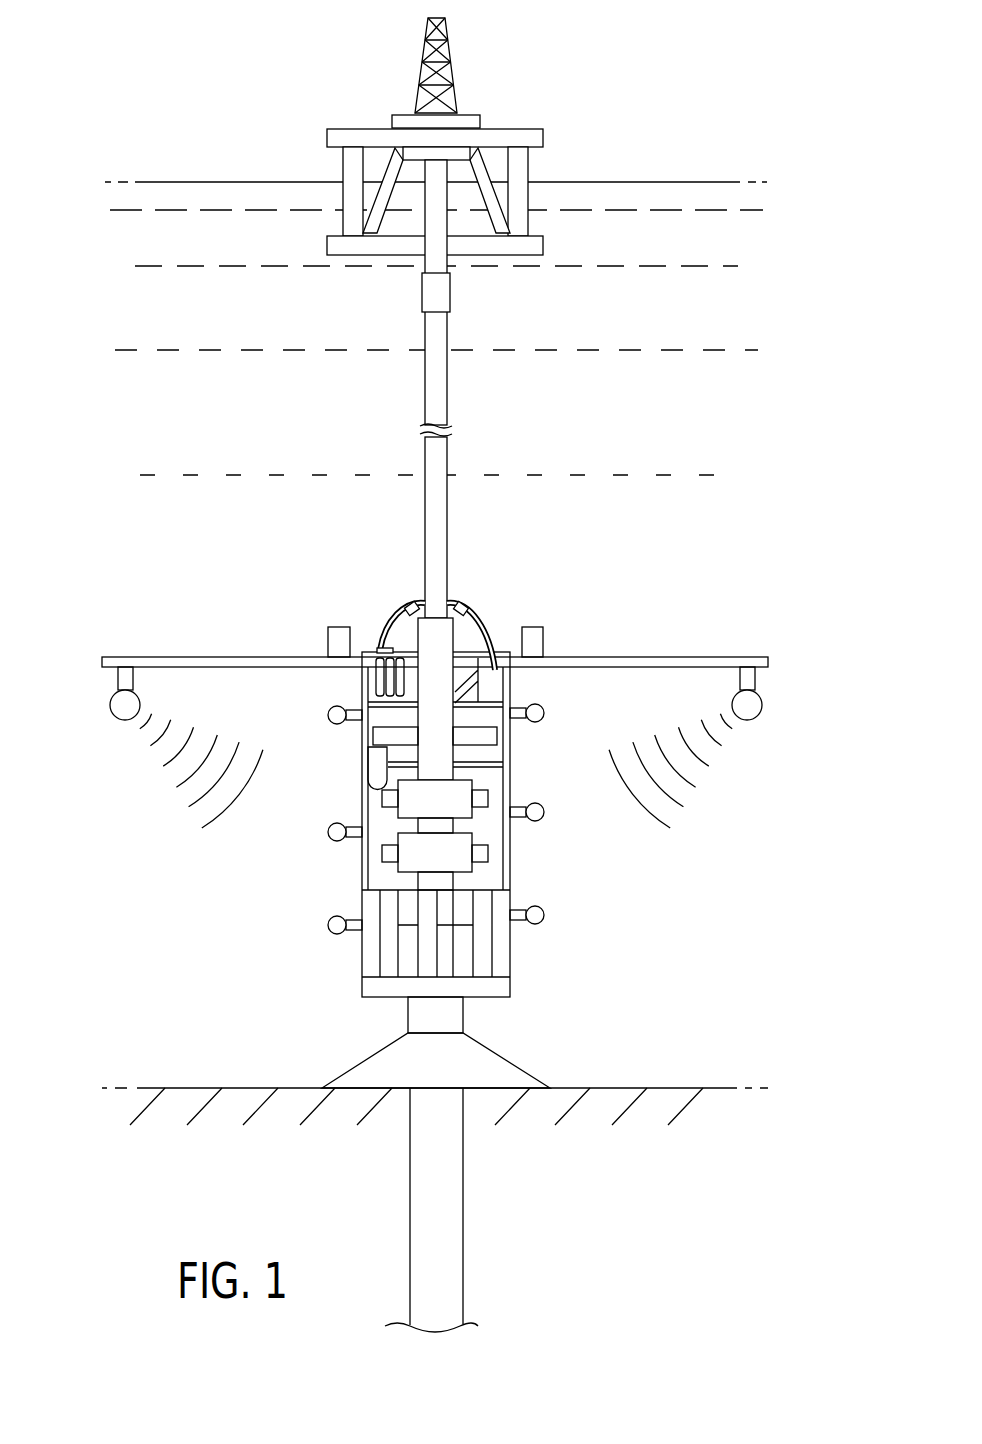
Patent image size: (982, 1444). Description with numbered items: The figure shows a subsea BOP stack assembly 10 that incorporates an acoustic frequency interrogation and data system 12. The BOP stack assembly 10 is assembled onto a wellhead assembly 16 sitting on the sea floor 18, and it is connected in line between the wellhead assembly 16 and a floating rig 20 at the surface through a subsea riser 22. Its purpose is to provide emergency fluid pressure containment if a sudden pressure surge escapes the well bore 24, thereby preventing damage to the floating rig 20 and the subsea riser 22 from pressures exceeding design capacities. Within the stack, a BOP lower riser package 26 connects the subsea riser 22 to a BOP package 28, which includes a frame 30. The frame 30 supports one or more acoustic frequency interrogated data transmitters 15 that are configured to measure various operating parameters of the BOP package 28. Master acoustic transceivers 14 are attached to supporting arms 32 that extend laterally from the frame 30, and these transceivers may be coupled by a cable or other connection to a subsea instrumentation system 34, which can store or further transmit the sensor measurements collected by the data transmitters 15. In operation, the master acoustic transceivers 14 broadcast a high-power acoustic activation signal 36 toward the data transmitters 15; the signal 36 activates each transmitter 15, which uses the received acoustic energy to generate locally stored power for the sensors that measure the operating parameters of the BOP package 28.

The subsea BOP stack assembly 10 is at (710, 572).
The acoustic frequency interrogation and data system 12 is at (228, 950).
The master acoustic transceivers 14 is at (125, 720).
The acoustic frequency interrogated data transmitters 15 is at (329, 713).
The wellhead assembly 16 is at (365, 1062).
The sea floor 18 is at (630, 1088).
The floating rig 20 is at (528, 97).
The subsea riser 22 is at (447, 368).
The well bore 24 is at (463, 1205).
The BOP lower riser package 26 is at (360, 775).
The BOP package 28 is at (510, 837).
The frame 30 is at (360, 805).
The supporting arms 32 is at (233, 657).
The subsea instrumentation system 34 is at (338, 627).
The high-power acoustic activation signal 36 is at (160, 822).